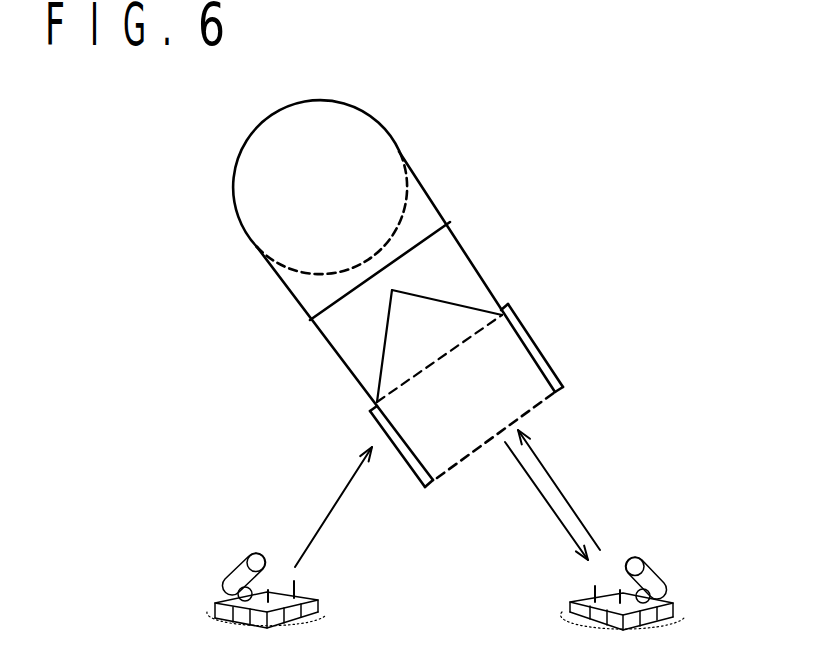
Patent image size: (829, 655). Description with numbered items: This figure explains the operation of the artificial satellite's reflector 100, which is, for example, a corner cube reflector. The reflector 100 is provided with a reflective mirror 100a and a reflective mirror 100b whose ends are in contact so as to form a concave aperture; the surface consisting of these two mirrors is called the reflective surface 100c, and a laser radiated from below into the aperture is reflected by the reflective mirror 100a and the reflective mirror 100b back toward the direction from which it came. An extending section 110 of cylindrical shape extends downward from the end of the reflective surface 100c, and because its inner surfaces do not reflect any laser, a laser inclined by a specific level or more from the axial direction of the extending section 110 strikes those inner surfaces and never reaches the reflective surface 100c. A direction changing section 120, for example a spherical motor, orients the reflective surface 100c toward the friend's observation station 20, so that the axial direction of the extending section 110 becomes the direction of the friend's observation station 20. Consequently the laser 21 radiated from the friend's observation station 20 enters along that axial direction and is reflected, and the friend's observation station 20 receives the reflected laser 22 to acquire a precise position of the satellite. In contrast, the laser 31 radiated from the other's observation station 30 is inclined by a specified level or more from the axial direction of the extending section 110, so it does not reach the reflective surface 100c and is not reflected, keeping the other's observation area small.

The reflector 100 is at (475, 272).
The reflective mirror 100a is at (385, 355).
The reflective mirror 100b is at (458, 300).
The reflective surface 100c is at (498, 373).
The extending section 110 is at (579, 381).
The direction changing section 120 is at (412, 188).
The friend's observation station 20 is at (676, 607).
The laser 21 is at (557, 488).
The reflected laser 22 is at (546, 508).
The other's observation station 30 is at (218, 607).
The laser 31 is at (340, 503).